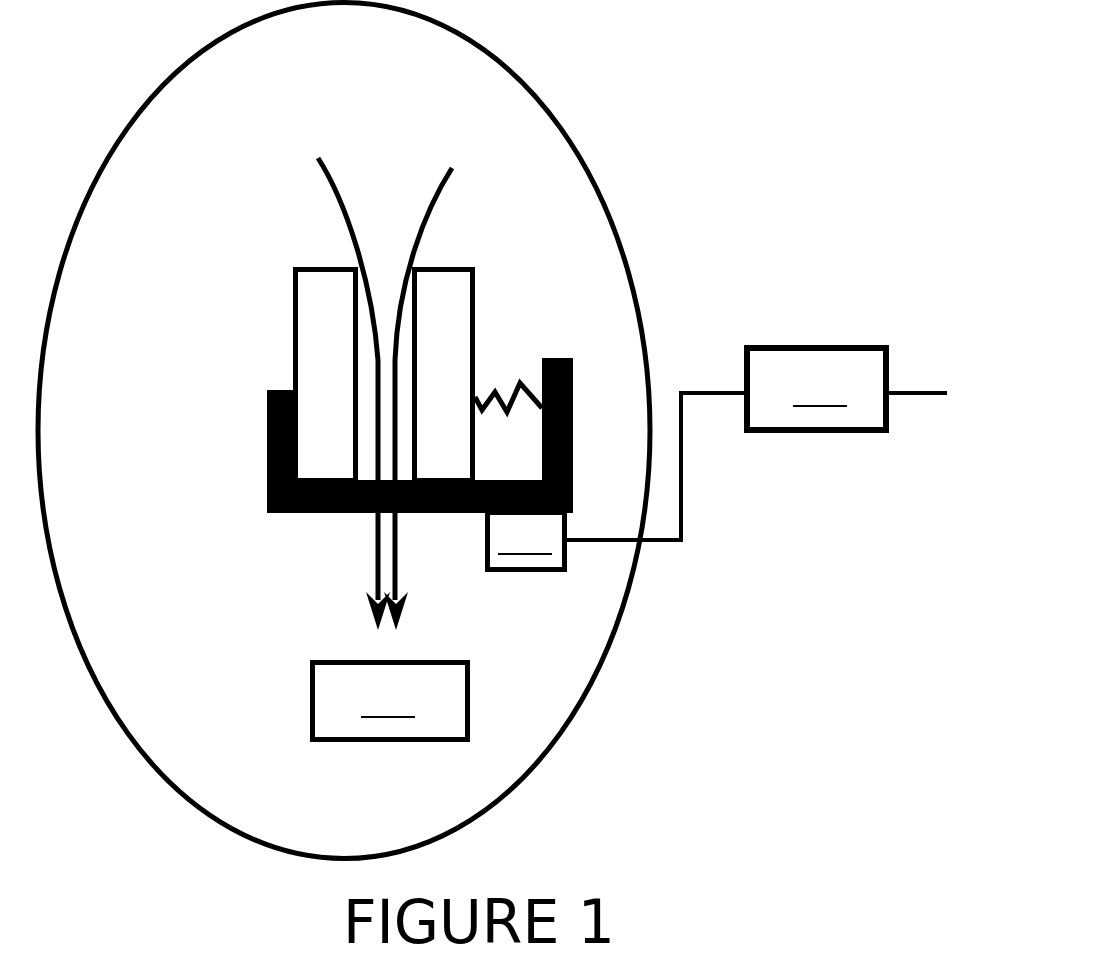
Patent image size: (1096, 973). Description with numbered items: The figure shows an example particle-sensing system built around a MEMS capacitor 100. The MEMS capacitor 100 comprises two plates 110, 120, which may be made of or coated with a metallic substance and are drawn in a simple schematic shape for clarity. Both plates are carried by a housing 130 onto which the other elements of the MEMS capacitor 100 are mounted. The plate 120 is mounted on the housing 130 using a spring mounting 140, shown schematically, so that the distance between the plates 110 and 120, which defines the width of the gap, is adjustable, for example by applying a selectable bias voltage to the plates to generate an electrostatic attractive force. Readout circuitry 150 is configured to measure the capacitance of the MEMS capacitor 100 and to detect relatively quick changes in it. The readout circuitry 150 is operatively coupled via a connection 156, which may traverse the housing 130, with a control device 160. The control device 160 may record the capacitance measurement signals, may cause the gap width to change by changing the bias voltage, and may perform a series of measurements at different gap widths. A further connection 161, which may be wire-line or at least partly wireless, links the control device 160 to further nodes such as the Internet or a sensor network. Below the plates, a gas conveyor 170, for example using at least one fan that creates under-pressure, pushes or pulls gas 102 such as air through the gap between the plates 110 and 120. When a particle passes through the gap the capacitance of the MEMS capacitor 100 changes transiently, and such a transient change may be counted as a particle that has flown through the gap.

The MEMS capacitor 100 is at (124, 130).
The gas 102 is at (428, 197).
The plate 110 is at (312, 330).
The plate 120 is at (453, 290).
The housing 130 is at (267, 480).
The spring mounting 140 is at (490, 395).
The readout circuitry 150 is at (526, 541).
The connection 156 is at (681, 462).
The control device 160 is at (816, 389).
The connection 161 is at (928, 393).
The gas conveyor 170 is at (390, 701).